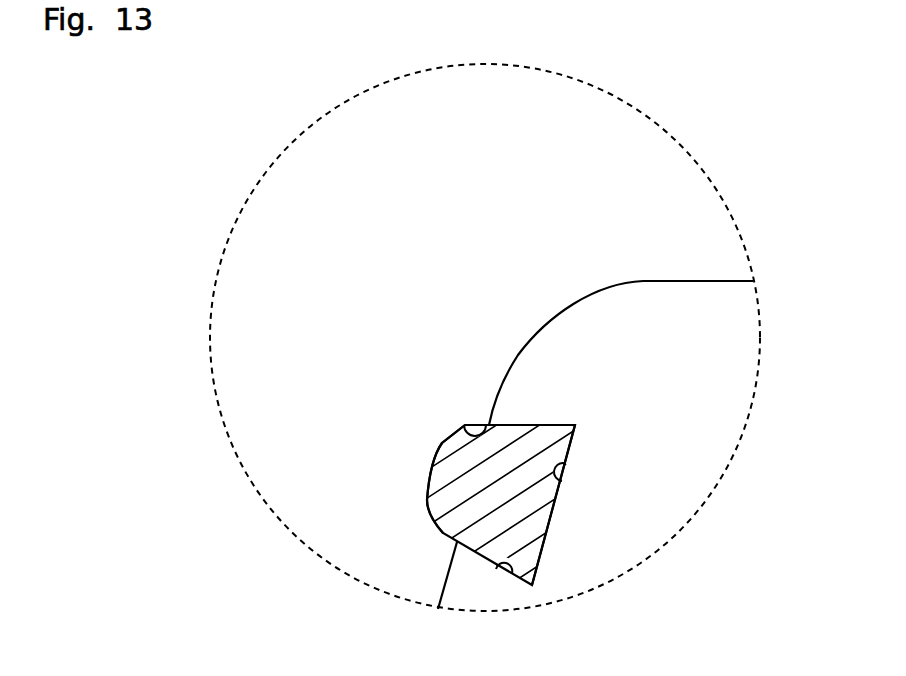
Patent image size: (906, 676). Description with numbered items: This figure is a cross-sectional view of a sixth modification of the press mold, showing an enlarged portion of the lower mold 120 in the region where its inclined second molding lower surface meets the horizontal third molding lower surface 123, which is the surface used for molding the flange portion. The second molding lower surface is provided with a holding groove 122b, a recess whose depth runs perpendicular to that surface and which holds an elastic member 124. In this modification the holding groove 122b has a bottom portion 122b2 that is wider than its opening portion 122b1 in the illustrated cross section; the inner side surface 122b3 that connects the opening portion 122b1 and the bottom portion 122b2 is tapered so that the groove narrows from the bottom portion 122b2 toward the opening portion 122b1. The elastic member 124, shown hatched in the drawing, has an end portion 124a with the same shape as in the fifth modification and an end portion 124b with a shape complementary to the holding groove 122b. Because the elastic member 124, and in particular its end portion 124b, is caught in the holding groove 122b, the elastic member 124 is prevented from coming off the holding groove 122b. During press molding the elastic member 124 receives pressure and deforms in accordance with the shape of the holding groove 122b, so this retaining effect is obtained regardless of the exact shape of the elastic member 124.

The lower mold 120 is at (578, 315).
The third molding lower surface 123 is at (693, 281).
The elastic member 124 is at (487, 481).
The end portion 124a is at (428, 518).
The end portion 124b is at (558, 510).
The opening portion 122b1 is at (457, 543).
The bottom portion 122b2 is at (562, 483).
The inner side surface 122b3 is at (402, 482).
The holding groove 122b is at (465, 423).